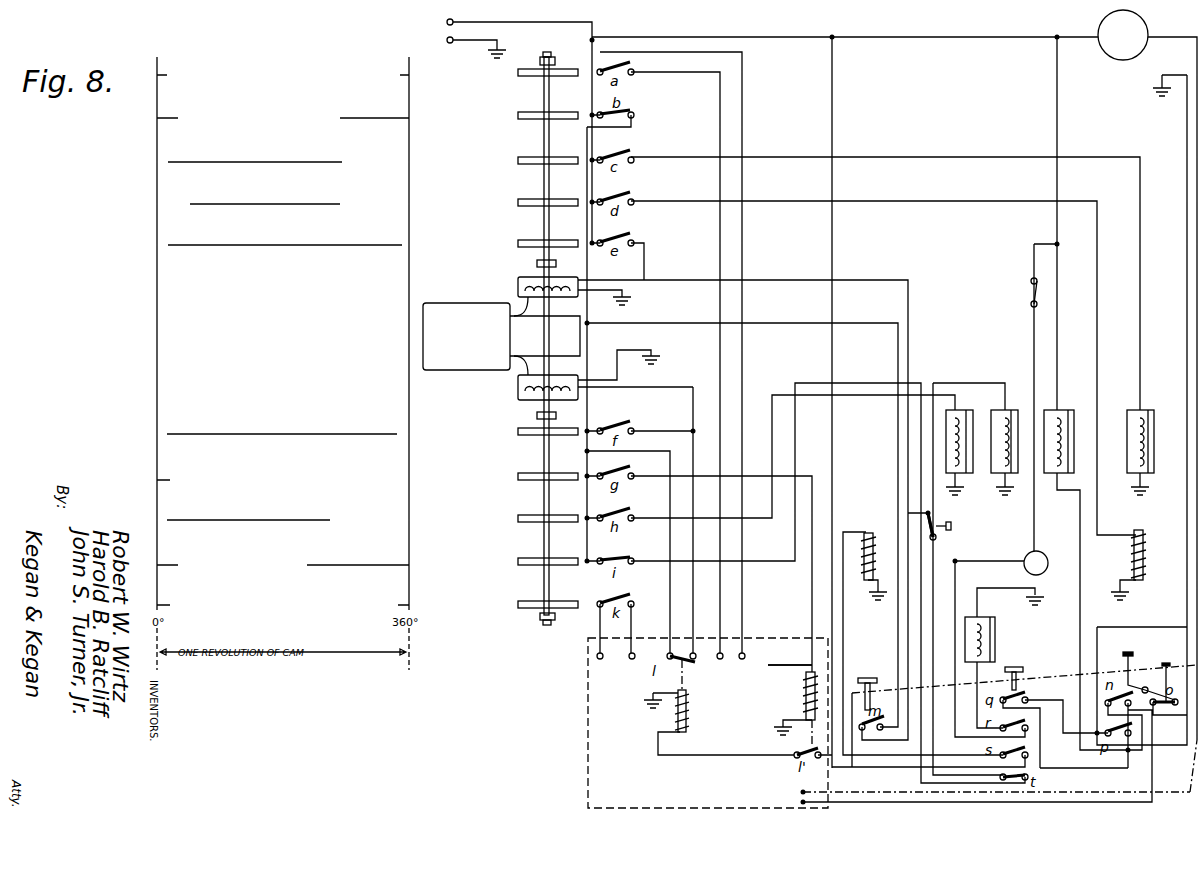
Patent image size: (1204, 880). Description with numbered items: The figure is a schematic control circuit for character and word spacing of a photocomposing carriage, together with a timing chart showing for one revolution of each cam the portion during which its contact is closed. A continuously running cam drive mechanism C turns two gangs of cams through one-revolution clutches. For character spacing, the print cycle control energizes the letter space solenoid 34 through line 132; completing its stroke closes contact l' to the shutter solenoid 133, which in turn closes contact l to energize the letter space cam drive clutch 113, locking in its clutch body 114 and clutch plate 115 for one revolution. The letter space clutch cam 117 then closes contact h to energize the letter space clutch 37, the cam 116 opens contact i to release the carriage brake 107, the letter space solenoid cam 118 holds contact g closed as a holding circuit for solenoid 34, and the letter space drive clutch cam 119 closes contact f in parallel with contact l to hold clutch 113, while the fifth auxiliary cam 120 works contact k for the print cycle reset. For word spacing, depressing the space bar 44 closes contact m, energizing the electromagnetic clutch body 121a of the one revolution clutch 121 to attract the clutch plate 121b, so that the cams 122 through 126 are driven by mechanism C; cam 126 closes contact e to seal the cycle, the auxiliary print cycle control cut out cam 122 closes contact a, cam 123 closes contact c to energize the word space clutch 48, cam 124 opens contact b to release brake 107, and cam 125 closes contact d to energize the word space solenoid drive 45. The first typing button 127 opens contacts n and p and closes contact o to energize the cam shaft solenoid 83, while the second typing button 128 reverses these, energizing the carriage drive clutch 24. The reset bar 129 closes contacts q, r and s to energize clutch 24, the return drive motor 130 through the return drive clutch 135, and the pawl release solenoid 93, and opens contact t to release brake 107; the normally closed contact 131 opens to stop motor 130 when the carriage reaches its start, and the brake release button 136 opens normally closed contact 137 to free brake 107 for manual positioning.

The auxiliary print cycle control cut out cam 122 is at (518, 72).
The cam 124 is at (518, 115).
The cam 123 is at (518, 160).
The cam 125 is at (518, 202).
The cam 126 is at (518, 243).
The electromagnetic clutch body 121a is at (537, 263).
The one revolution clutch 121 is at (512, 290).
The clutch plate 121b is at (524, 306).
The cam drive mechanism C is at (456, 297).
The clutch plate 115 is at (520, 361).
The letter space cam drive clutch 113 is at (512, 393).
The clutch body 114 is at (537, 414).
The letter space drive clutch cam 119 is at (518, 431).
The letter space solenoid cam 118 is at (518, 476).
The letter space clutch cam 117 is at (518, 518).
The cam 116 is at (518, 561).
The fifth auxiliary cam 120 is at (518, 604).
The cam shaft solenoid 83 is at (1118, 55).
The normally closed contact 131 is at (1031, 292).
The letter space clutch 37 is at (975, 414).
The carriage brake 107 is at (1020, 410).
The carriage drive clutch 24 is at (1078, 412).
The word space clutch 48 is at (1156, 412).
The pawl release solenoid 93 is at (874, 534).
The normally closed contact 137 is at (936, 522).
The brake release button 136 is at (952, 527).
The return drive motor 130 is at (1046, 554).
The word space solenoid drive 45 is at (1146, 532).
The return drive clutch 135 is at (996, 636).
The reset bar 129 is at (1017, 666).
The second typing button 128 is at (1122, 654).
The first typing button 127 is at (1164, 662).
The space bar 44 is at (868, 678).
The line 132 is at (785, 665).
The shutter solenoid 133 is at (690, 710).
The letter space solenoid 34 is at (806, 696).